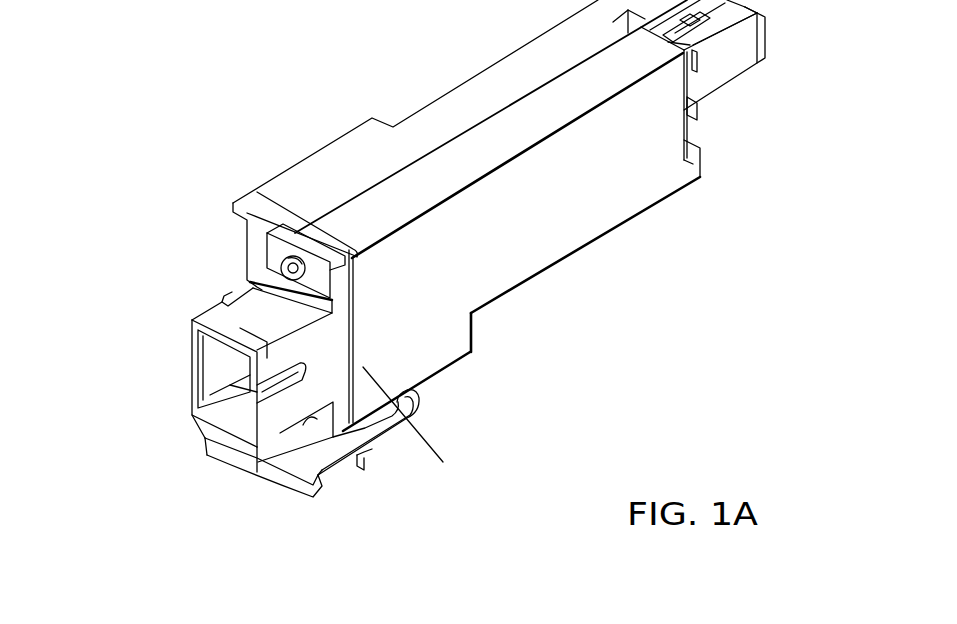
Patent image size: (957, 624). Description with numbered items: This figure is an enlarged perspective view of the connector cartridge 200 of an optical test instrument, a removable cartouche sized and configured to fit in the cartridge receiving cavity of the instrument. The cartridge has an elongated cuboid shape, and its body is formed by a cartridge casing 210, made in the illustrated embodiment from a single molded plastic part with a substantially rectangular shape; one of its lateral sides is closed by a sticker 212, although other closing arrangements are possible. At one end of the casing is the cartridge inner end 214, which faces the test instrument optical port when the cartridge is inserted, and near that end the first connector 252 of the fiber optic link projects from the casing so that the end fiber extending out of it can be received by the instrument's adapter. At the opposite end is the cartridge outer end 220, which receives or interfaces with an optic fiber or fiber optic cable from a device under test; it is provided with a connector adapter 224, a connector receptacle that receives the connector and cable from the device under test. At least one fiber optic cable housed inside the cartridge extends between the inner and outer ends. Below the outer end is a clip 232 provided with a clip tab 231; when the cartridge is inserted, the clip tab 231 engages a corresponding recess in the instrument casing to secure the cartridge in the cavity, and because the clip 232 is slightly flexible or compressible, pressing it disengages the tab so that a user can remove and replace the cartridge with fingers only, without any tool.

The connector cartridge 200 is at (637, 325).
The cartridge casing 210 is at (357, 160).
The sticker 212 is at (433, 307).
The cartridge inner end 214 is at (722, 161).
The cartridge outer end 220 is at (145, 292).
The connector adapter 224 is at (363, 429).
The clip tab 231 is at (363, 472).
The clip 232 is at (240, 493).
The first connector 252 is at (743, 73).